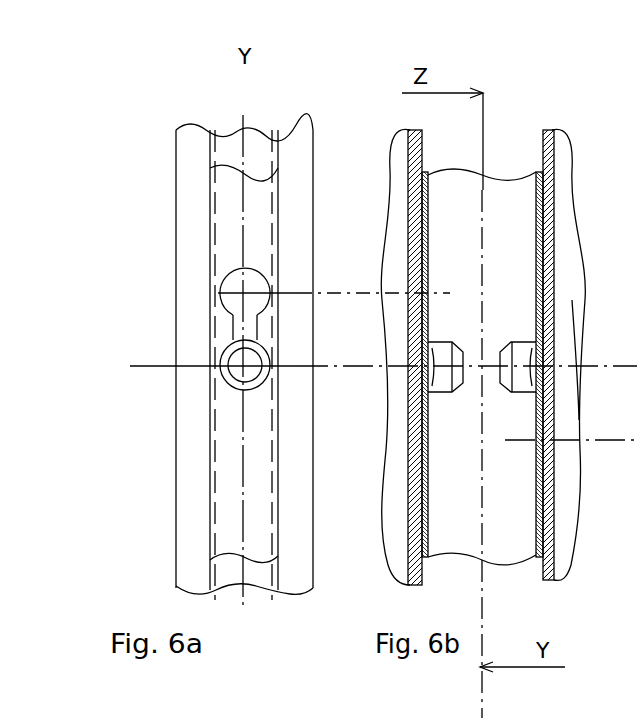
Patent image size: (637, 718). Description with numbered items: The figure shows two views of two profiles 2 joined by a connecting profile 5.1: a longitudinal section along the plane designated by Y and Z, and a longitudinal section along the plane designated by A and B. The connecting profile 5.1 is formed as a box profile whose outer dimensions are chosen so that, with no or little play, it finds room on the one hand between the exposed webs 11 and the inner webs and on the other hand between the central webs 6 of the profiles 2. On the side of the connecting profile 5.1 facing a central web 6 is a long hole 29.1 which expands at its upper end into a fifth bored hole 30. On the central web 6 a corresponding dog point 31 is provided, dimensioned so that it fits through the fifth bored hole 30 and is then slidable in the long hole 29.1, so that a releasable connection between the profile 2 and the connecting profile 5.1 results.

In FIG. 6B, the profile 2 is at (397, 538).
In FIG. 6A, the connecting profile 5.1 is at (232, 195).
In FIG. 6B, the connecting profile 5.1 is at (497, 190).
In FIG. 6A, the central web 6 is at (222, 572).
In FIG. 6B, the central web 6 is at (418, 580).
In FIG. 6A, the exposed web 11 is at (192, 469).
In FIG. 6B, the exposed web 11 is at (636, 498).
In FIG. 6A, the long hole 29.1 is at (240, 330).
In FIG. 6A, the fifth bored hole 30 is at (237, 291).
In FIG. 6A, the dog point 31 is at (222, 366).
In FIG. 6B, the dog point 31 is at (437, 351).